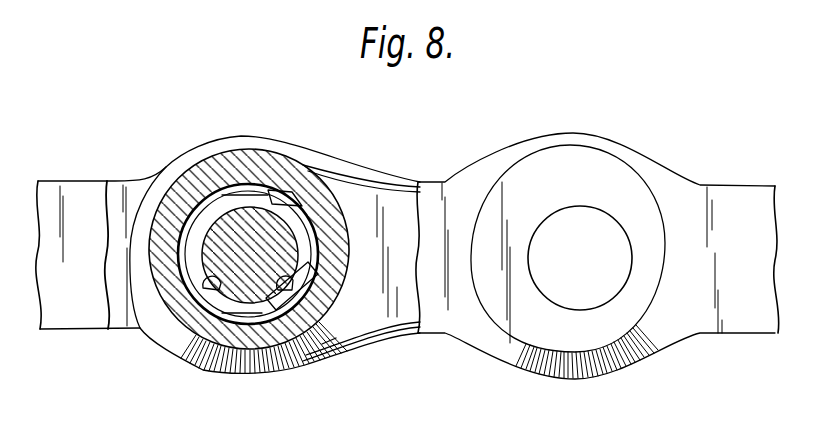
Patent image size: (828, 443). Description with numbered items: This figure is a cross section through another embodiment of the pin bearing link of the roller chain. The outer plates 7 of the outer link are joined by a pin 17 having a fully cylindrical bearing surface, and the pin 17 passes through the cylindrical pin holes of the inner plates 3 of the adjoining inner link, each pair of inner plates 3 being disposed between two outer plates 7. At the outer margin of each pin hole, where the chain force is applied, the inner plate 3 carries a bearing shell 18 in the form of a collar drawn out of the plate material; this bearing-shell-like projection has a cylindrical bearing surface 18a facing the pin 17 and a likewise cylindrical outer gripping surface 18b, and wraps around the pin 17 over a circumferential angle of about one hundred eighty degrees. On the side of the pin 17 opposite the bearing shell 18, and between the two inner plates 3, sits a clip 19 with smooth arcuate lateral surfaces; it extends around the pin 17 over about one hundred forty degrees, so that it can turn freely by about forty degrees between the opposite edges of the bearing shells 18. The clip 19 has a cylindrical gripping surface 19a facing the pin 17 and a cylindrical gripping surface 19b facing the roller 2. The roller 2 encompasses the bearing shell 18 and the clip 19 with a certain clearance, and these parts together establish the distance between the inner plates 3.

The roller 2 is at (305, 178).
The inner plate 3 is at (378, 182).
The outer plate 7 is at (90, 207).
The pin 17 is at (222, 233).
The bearing shell 18 is at (222, 270).
The bearing surface 18a is at (205, 289).
The outer gripping surface 18b is at (208, 318).
The clip 19 is at (272, 192).
The gripping surface 19a is at (278, 312).
The gripping surface 19b is at (333, 348).